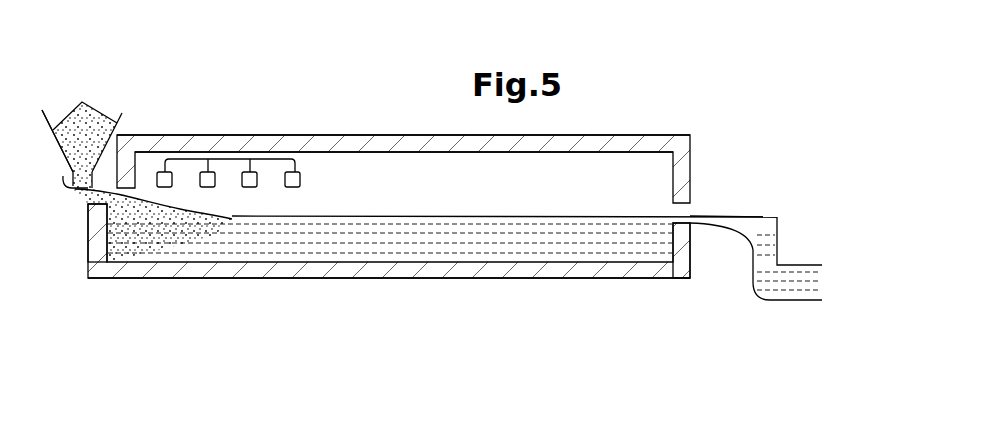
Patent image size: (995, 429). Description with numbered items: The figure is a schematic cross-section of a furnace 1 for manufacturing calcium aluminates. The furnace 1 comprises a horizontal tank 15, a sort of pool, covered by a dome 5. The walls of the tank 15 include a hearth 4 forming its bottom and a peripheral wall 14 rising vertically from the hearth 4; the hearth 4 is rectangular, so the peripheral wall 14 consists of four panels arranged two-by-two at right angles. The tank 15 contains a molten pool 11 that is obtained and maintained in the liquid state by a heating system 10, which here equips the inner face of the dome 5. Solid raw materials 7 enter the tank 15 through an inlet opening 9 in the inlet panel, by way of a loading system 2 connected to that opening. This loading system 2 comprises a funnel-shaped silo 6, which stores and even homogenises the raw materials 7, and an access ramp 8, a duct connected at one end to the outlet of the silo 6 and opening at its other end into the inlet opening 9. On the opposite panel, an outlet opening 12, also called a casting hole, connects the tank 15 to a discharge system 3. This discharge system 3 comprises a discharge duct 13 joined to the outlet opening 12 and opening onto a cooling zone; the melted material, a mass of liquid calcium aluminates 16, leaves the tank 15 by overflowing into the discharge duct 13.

The furnace 1 is at (664, 91).
The loading system 2 is at (128, 118).
The discharge system 3 is at (707, 194).
The hearth 4 is at (248, 268).
The dome 5 is at (353, 137).
The silo 6 is at (53, 137).
The raw materials 7 is at (92, 122).
The access ramp 8 is at (105, 204).
The inlet opening 9 is at (118, 245).
The heating system 10 is at (295, 168).
The molten pool 11 is at (558, 232).
The outlet opening 12 is at (682, 210).
The discharge duct 13 is at (795, 270).
The peripheral wall 14 is at (692, 247).
The tank 15 is at (142, 283).
The mass of liquid calcium aluminates 16 is at (792, 297).